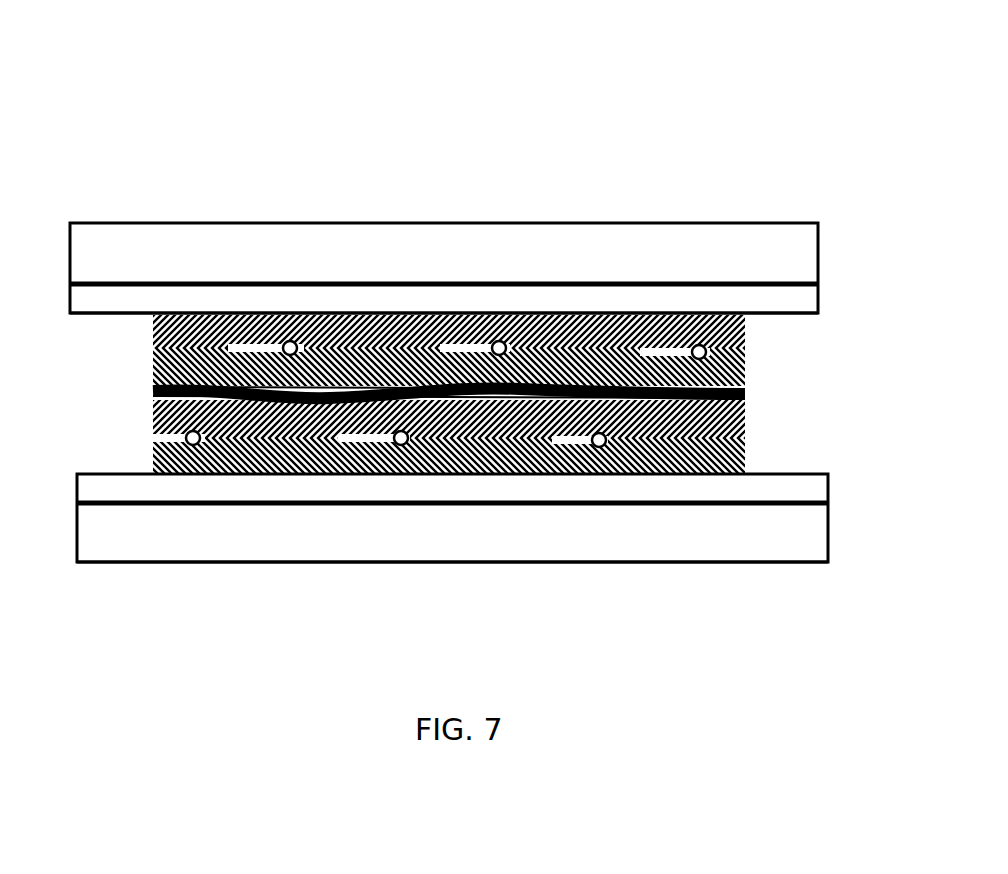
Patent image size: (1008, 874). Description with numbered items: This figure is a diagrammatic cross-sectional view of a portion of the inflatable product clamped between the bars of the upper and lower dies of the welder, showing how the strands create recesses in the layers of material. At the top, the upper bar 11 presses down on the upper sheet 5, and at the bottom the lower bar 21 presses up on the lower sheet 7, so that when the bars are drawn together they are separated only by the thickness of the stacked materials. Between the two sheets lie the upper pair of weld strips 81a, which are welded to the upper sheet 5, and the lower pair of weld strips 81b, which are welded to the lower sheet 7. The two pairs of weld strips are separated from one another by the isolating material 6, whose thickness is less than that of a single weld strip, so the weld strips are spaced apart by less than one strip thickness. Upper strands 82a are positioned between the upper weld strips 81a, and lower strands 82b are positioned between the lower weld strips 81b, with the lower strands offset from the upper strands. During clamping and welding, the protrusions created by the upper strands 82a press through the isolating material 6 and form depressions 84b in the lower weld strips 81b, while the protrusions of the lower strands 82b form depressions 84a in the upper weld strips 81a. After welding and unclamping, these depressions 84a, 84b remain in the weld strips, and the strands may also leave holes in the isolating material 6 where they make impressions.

The upper bar 11 is at (518, 253).
The upper sheet 5 is at (682, 298).
The lower sheet 7 is at (474, 495).
The lower bar 21 is at (729, 531).
The isolating material 6 is at (155, 390).
The upper weld strips 81a is at (200, 327).
The lower weld strips 81b is at (279, 460).
The upper strands 82a is at (290, 340).
The lower strands 82b is at (193, 446).
The depressions in upper weld strips 84a is at (200, 393).
The depressions in lower weld strips 84b is at (307, 400).